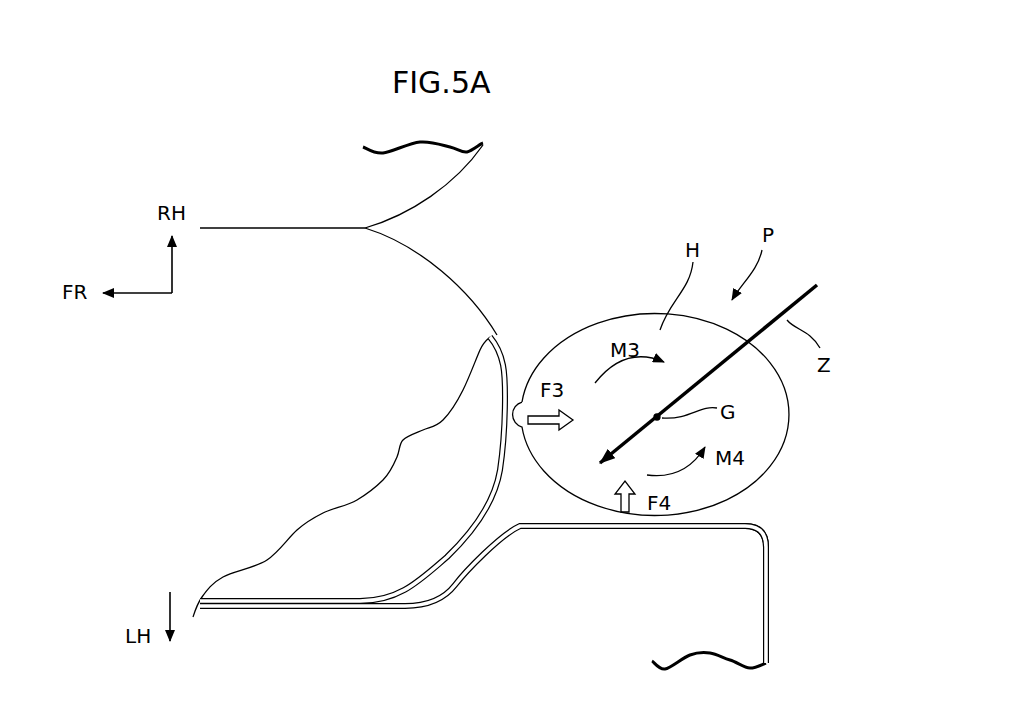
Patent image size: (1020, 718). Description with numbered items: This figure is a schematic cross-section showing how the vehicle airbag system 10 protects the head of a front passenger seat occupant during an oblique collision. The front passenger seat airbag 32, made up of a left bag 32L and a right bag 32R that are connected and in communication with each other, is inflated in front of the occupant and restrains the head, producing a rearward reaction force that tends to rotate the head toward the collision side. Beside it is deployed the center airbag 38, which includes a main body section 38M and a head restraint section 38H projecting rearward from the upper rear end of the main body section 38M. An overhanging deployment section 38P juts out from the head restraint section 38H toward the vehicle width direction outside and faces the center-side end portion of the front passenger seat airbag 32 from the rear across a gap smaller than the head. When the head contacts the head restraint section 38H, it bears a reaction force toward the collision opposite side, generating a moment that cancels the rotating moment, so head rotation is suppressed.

The vehicle airbag system 10 is at (677, 148).
The front passenger seat airbag 32 is at (429, 238).
The right bag 32R is at (443, 180).
The left bag 32L is at (464, 281).
The center airbag 38 is at (779, 593).
The main body section 38M is at (307, 627).
The overhanging deployment section 38P is at (745, 547).
The head restraint section 38H is at (750, 641).